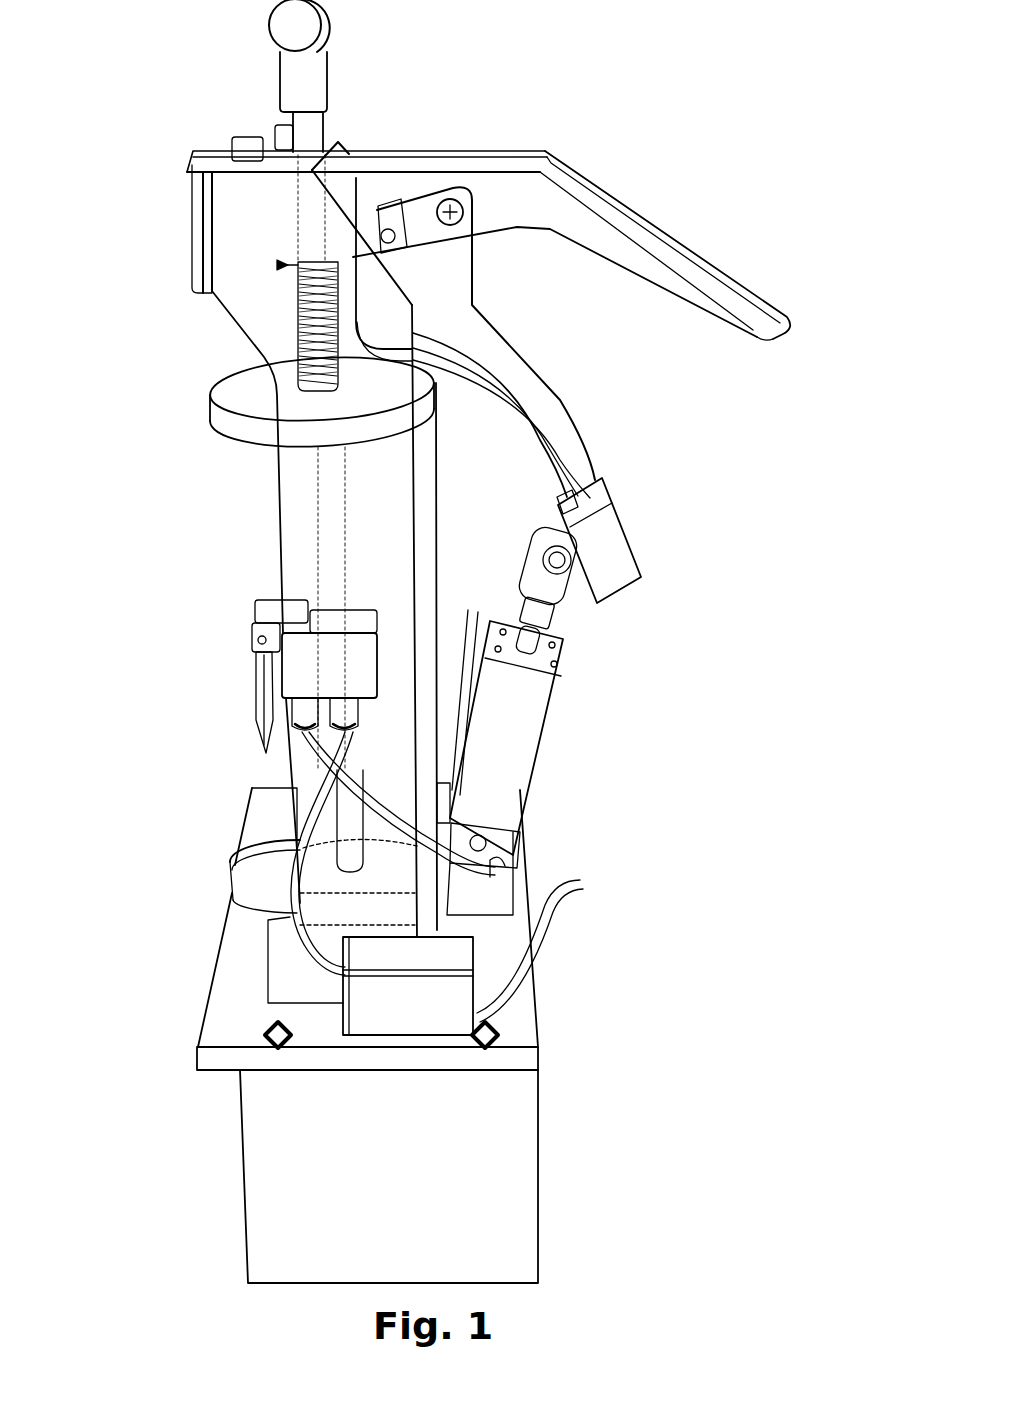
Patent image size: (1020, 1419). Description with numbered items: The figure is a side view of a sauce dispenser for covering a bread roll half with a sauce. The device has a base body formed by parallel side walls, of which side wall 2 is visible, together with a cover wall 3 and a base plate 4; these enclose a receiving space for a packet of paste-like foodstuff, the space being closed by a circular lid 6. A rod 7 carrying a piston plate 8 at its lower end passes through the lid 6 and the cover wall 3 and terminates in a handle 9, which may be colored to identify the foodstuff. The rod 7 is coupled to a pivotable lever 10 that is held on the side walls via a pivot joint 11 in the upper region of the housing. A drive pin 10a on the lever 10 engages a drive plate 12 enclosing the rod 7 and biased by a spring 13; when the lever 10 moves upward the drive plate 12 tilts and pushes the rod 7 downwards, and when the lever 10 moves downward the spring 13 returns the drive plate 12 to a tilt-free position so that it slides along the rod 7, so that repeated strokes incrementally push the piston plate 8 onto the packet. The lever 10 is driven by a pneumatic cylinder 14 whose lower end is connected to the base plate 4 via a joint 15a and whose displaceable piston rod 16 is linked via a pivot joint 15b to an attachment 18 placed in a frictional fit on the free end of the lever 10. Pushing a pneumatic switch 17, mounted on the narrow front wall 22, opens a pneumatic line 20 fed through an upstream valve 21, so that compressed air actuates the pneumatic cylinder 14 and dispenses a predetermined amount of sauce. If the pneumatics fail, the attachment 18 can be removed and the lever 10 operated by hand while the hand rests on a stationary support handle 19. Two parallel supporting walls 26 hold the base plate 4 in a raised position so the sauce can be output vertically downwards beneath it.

The handle 9 is at (290, 20).
The rod 7 is at (323, 125).
The drive plate 12 is at (280, 266).
The cover wall 3 is at (217, 150).
The narrow front wall 22 is at (198, 242).
The spring 13 is at (298, 314).
The circular lid 6 is at (210, 393).
The side wall 2 is at (275, 472).
The lever 10 is at (568, 430).
The support handle 19 is at (670, 272).
The pivot joint 11 is at (457, 195).
The drive pin 10a is at (401, 212).
The attachment 18 is at (617, 553).
The pivot joint 15b is at (563, 562).
The piston rod 16 is at (565, 643).
The pneumatic cylinder 14 is at (530, 737).
The joint 15a is at (465, 846).
The pneumatic switch 17 is at (256, 670).
The piston plate 8 is at (270, 857).
The valve 21 is at (430, 1020).
The pneumatic line 20 is at (583, 892).
The base plate 4 is at (223, 1000).
The supporting wall 26 is at (515, 1213).